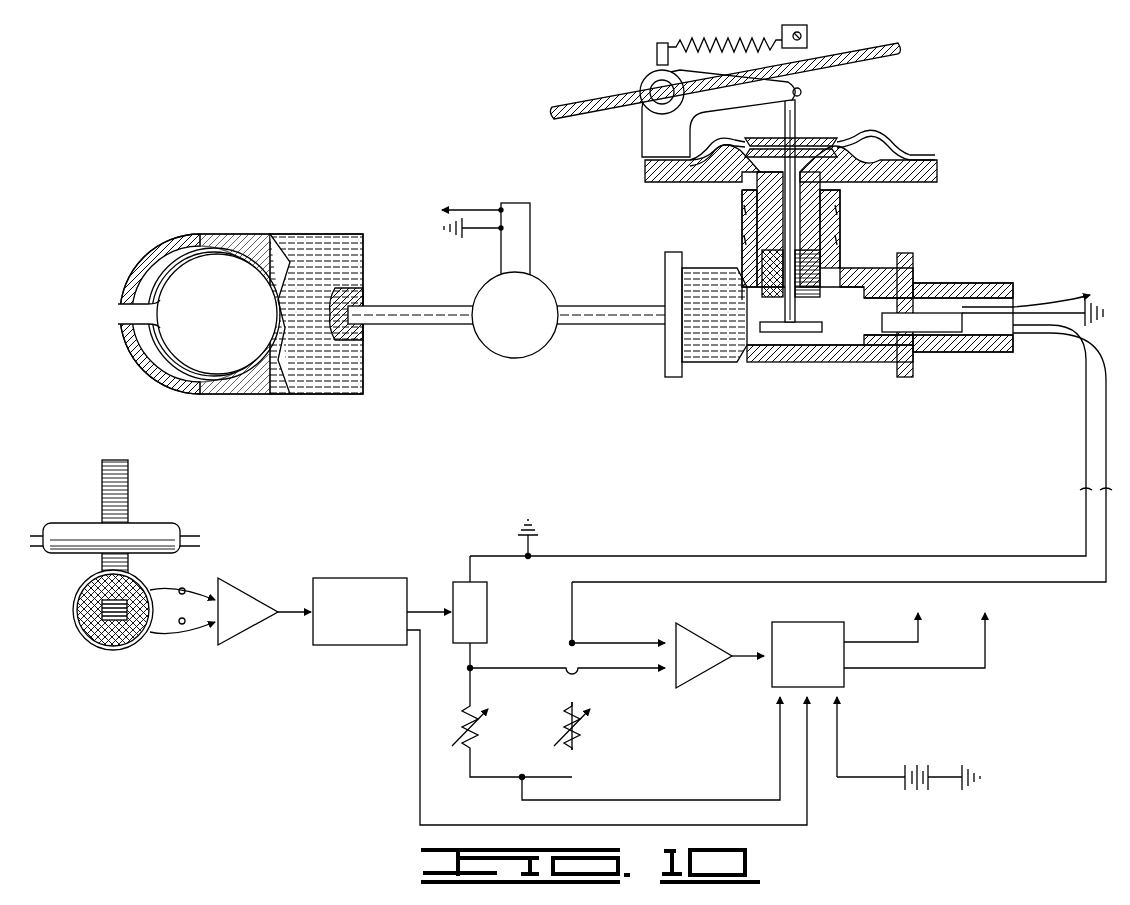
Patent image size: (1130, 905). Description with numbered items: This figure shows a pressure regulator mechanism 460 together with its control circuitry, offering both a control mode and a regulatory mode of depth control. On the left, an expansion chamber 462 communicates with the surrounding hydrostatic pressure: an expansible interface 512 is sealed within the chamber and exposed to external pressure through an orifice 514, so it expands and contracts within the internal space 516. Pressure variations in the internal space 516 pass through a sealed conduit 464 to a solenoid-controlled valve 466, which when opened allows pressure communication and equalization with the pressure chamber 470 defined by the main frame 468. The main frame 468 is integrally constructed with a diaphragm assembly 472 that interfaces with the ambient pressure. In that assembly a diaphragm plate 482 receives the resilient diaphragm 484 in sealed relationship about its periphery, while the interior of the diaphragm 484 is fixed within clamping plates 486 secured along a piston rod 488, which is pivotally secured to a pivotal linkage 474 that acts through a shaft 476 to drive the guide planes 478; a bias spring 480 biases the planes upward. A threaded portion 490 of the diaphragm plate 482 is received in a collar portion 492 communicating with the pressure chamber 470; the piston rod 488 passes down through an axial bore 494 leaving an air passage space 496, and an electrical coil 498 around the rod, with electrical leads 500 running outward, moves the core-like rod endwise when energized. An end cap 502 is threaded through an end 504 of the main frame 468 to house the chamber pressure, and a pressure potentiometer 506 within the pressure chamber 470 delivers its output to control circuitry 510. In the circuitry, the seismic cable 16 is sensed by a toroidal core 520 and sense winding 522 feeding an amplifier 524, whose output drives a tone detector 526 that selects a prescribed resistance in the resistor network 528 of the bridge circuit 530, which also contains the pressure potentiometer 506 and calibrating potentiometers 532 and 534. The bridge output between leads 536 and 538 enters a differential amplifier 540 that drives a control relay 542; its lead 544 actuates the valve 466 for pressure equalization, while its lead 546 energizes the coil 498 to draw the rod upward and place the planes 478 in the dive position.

The seismic cable 16 is at (80, 527).
The pressure regulator mechanism 460 is at (448, 182).
The expansion chamber 462 is at (203, 236).
The sealed conduit 464 is at (418, 324).
The solenoid-controlled valve 466 is at (538, 283).
The main frame 468 is at (855, 275).
The pressure chamber 470 is at (864, 326).
The diaphragm assembly 472 is at (943, 117).
The pivotal linkage 474 is at (726, 106).
The shaft 476 is at (652, 85).
The guide planes 478 is at (858, 50).
The bias spring 480 is at (716, 42).
The diaphragm plate 482 is at (862, 178).
The diaphragm 484 is at (900, 158).
The clamping plates 486 is at (806, 140).
The piston rod 488 is at (805, 112).
The threaded portion 490 is at (757, 198).
The collar portion 492 is at (746, 232).
The axial bore 494 is at (800, 240).
The air passage space 496 is at (828, 218).
The electrical coil 498 is at (770, 270).
The electrical leads 500 is at (1042, 308).
The end cap 502 is at (950, 285).
The end of main frame 504 is at (905, 268).
The pressure potentiometer 506 is at (940, 328).
The control circuitry 510 is at (1090, 495).
The expansible interface 512 is at (170, 258).
The orifice 514 is at (118, 314).
The internal space 516 is at (243, 256).
The toroidal core 520 is at (122, 494).
The sense winding 522 is at (108, 642).
The amplifier 524 is at (247, 607).
The tone detector 526 is at (372, 578).
The resistor network 528 is at (480, 594).
The bridge circuit 530 is at (547, 629).
The calibrating potentiometer 532 is at (478, 745).
The calibrating potentiometer 534 is at (566, 716).
The lead 536 is at (601, 648).
The lead 538 is at (602, 666).
The differential amplifier 540 is at (718, 666).
The control relay 542 is at (800, 622).
The lead 544 is at (891, 622).
The lead 546 is at (912, 672).